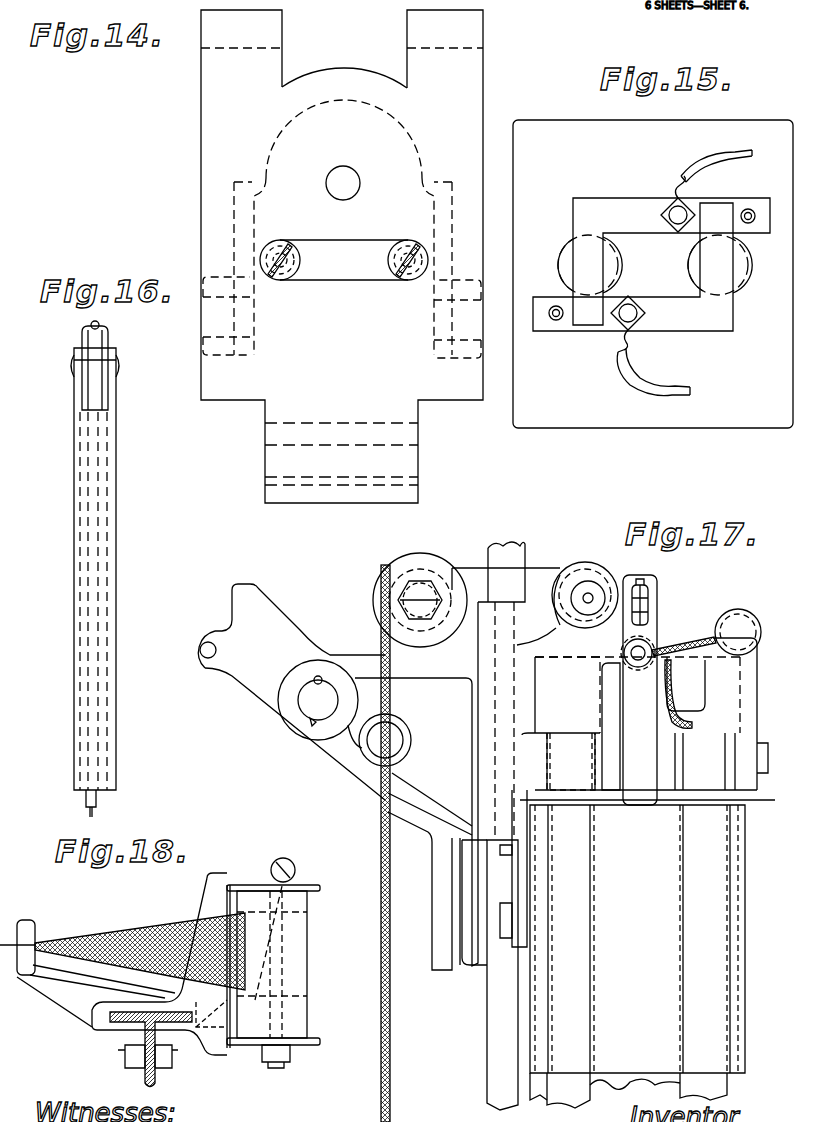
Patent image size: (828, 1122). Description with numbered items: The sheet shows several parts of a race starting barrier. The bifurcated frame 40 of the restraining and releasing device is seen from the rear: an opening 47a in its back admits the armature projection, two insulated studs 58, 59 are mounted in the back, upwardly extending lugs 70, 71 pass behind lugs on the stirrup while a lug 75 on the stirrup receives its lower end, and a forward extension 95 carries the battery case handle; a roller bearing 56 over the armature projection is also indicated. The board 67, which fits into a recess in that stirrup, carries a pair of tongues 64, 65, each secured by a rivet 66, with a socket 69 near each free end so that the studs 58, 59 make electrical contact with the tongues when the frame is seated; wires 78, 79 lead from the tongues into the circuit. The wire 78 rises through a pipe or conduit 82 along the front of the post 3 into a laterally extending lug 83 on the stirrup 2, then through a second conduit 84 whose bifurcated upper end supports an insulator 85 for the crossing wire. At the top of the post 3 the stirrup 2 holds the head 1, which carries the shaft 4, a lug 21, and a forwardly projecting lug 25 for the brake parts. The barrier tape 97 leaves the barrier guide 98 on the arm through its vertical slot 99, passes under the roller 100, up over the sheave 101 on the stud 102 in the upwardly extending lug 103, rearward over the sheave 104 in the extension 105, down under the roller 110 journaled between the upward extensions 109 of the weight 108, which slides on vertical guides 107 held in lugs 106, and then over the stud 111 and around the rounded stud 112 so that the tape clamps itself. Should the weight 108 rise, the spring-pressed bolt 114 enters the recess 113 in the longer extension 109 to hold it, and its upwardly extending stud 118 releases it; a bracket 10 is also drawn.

In FIG. 17, the head 1 is at (349, 656).
In FIG. 17, the stirrup 2 is at (486, 736).
In FIG. 17, the post 3 is at (743, 802).
In FIG. 17, the shaft 4 is at (309, 712).
In FIG. 17, the bracket 10 is at (438, 916).
In FIG. 17, the lug 21 is at (247, 603).
In FIG. 17, the forwardly projecting lug 25 is at (203, 672).
In FIG. 14, the bifurcated frame 40 is at (437, 392).
In FIG. 14, the opening 47a is at (348, 178).
In FIG. 18, the roller bearing 56 is at (157, 1078).
In FIG. 14, the stud 58 is at (270, 262).
In FIG. 14, the stud 59 is at (408, 250).
In FIG. 15, the tongue 64 is at (586, 320).
In FIG. 15, the tongue 65 is at (726, 268).
In FIG. 15, the rivet 66 is at (750, 208).
In FIG. 15, the board 67 is at (598, 413).
In FIG. 15, the socket 69 is at (567, 262).
In FIG. 14, the upwardly extending lug 70 is at (445, 49).
In FIG. 14, the upwardly extending lug 71 is at (241, 48).
In FIG. 14, the lug 75 is at (322, 430).
In FIG. 15, the wire 78 is at (702, 168).
In FIG. 16, the wire 78 is at (99, 325).
In FIG. 15, the wire 79 is at (660, 392).
In FIG. 17, the pipe or conduit 82 is at (494, 950).
In FIG. 17, the laterally extending lug 83 is at (490, 645).
In FIG. 16, the pipe or conduit 84 is at (112, 572).
In FIG. 17, the pipe or conduit 84 is at (497, 556).
In FIG. 16, the insulator 85 is at (100, 386).
In FIG. 14, the forward extension 95 is at (397, 485).
In FIG. 17, the barrier tape 97 is at (472, 568).
In FIG. 18, the barrier tape 97 is at (120, 935).
In FIG. 18, the barrier guide 98 is at (200, 892).
In FIG. 18, the vertical slot 99 is at (38, 940).
In FIG. 18, the roller 100 is at (298, 1016).
In FIG. 17, the roller or sheave 101 is at (378, 586).
In FIG. 17, the stud 102 is at (410, 601).
In FIG. 17, the upwardly extending lug 103 is at (441, 653).
In FIG. 17, the roller or sheave 104 is at (586, 568).
In FIG. 17, the extension 105 is at (556, 640).
In FIG. 17, the lug 106 is at (580, 740).
In FIG. 17, the vertical guide 107 is at (628, 1090).
In FIG. 17, the weight 108 is at (637, 947).
In FIG. 17, the upward extension 109 is at (652, 630).
In FIG. 17, the roller 110 is at (637, 672).
In FIG. 17, the stud 111 is at (687, 684).
In FIG. 17, the rounded stud 112 is at (738, 632).
In FIG. 17, the recess 113 is at (650, 608).
In FIG. 17, the bolt 114 is at (626, 636).
In FIG. 17, the upwardly extending stud 118 is at (648, 592).